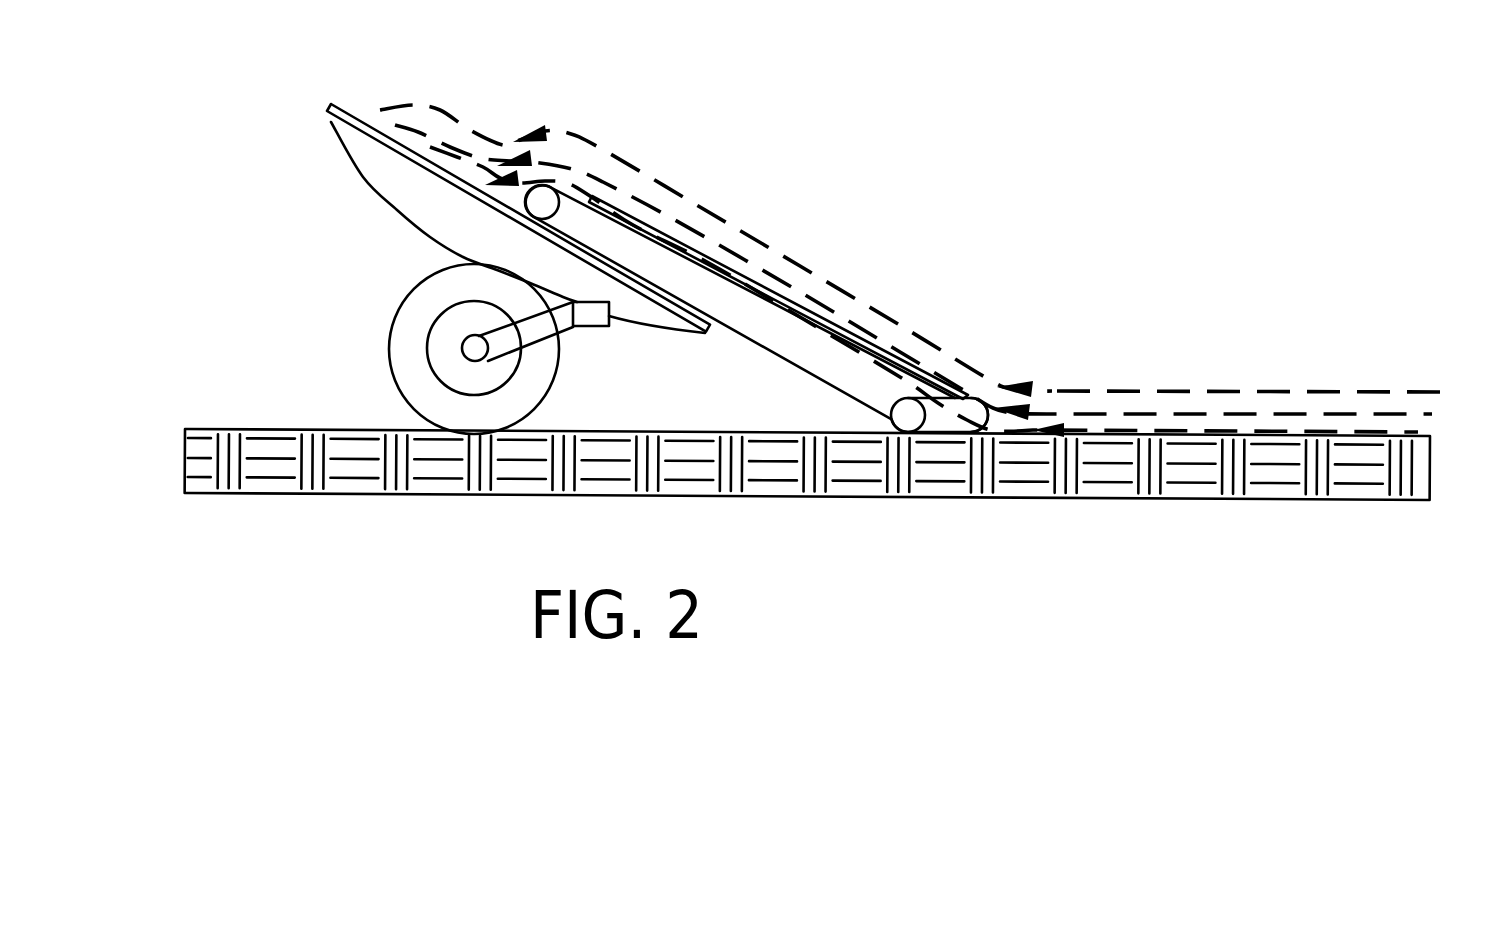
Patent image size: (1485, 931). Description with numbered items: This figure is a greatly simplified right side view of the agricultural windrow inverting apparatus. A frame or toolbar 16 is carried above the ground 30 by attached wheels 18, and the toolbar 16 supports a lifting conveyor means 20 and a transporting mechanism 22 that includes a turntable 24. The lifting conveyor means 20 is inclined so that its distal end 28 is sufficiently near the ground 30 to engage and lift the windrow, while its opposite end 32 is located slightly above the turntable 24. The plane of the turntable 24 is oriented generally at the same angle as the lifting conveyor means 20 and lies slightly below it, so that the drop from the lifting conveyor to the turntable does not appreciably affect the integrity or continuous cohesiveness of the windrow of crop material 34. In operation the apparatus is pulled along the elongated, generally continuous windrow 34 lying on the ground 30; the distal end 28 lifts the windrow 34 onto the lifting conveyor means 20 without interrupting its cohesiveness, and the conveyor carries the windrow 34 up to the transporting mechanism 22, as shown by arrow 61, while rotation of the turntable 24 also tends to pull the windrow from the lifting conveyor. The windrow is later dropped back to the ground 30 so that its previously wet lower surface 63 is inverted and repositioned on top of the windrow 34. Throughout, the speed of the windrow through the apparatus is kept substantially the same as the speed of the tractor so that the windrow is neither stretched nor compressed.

The toolbar 16 is at (597, 318).
The wheels 18 is at (410, 358).
The lifting conveyor means 20 is at (795, 325).
The transporting mechanism 22 is at (318, 92).
The turntable 24 is at (413, 165).
The distal end 28 is at (947, 427).
The ground 30 is at (999, 432).
The opposite end 32 is at (593, 195).
The windrow of crop material 34 is at (540, 137).
The arrow 61 is at (1217, 424).
The lower surface 63 is at (1403, 392).